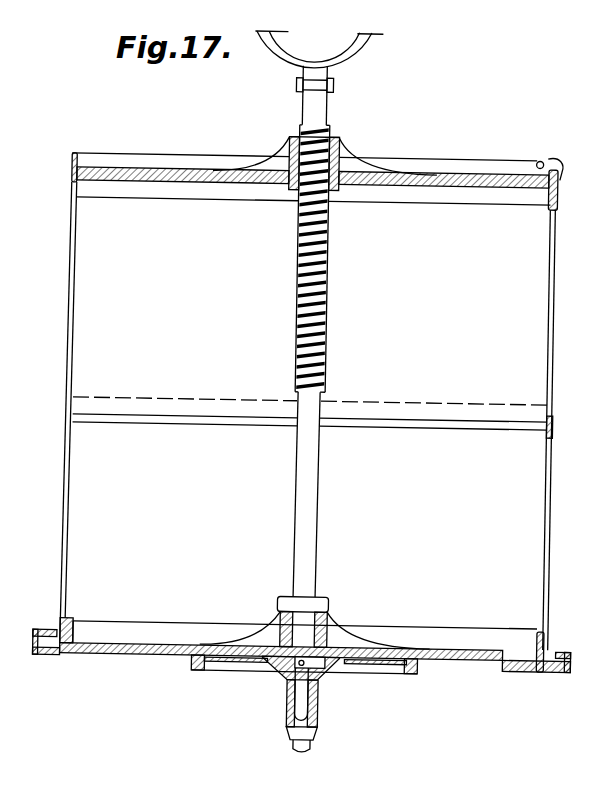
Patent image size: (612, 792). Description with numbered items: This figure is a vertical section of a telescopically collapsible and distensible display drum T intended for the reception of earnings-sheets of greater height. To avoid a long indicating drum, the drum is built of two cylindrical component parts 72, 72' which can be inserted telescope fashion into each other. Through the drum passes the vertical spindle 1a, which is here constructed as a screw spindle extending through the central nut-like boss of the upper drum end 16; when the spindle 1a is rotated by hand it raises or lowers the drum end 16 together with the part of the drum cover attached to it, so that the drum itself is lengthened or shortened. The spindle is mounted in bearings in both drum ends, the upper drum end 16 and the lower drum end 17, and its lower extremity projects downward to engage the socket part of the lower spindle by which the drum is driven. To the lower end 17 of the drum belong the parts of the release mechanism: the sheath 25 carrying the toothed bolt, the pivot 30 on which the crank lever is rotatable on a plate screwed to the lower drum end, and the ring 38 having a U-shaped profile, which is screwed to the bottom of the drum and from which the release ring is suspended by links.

The drum end 16 is at (347, 157).
The pivot 30 is at (533, 160).
The cylindrical component part 72' is at (562, 296).
The cylindrical component part 72 is at (558, 533).
The display drum T is at (171, 472).
The spindle 1a is at (310, 510).
The sheath 25 is at (338, 683).
The drum end 17 is at (453, 660).
The ring 38 is at (567, 655).